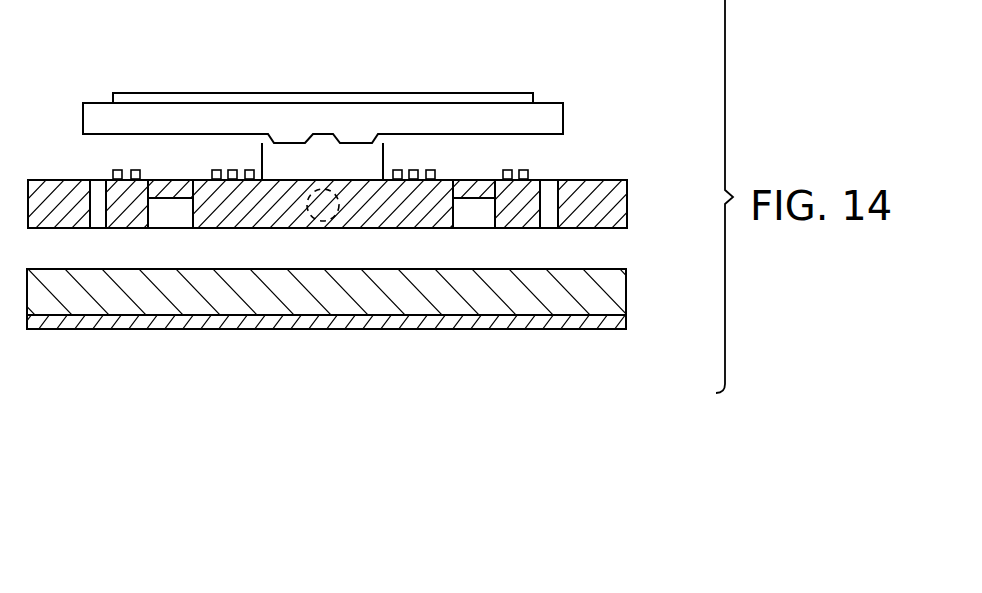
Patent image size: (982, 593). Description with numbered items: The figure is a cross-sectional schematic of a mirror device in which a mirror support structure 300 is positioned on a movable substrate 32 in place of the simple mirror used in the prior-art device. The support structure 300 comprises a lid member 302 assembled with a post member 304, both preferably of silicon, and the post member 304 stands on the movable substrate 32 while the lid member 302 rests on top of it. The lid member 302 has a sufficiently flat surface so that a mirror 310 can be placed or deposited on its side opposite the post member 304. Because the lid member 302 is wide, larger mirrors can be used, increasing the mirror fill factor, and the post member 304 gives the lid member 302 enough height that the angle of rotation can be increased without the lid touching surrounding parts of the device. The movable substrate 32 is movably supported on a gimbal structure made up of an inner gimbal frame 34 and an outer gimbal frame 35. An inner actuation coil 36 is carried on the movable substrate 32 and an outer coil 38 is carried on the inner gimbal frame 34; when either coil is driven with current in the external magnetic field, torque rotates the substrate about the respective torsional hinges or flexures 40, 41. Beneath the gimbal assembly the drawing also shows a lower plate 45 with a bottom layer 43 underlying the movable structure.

The mirror support structure 300 is at (381, 96).
The lid member 302 is at (558, 103).
The mirror 310 is at (195, 93).
The post member 304 is at (373, 160).
The inner actuation coil 36 is at (213, 170).
The outer coil 38 is at (525, 170).
The outer gimbal frame 35 is at (337, 220).
The inner gimbal frame 34 is at (120, 220).
The movable substrate 32 is at (213, 222).
The torsional hinge 41 is at (327, 221).
The torsional hinge 40 is at (463, 200).
The base plate 45 is at (346, 309).
The lower layer 43 is at (538, 308).